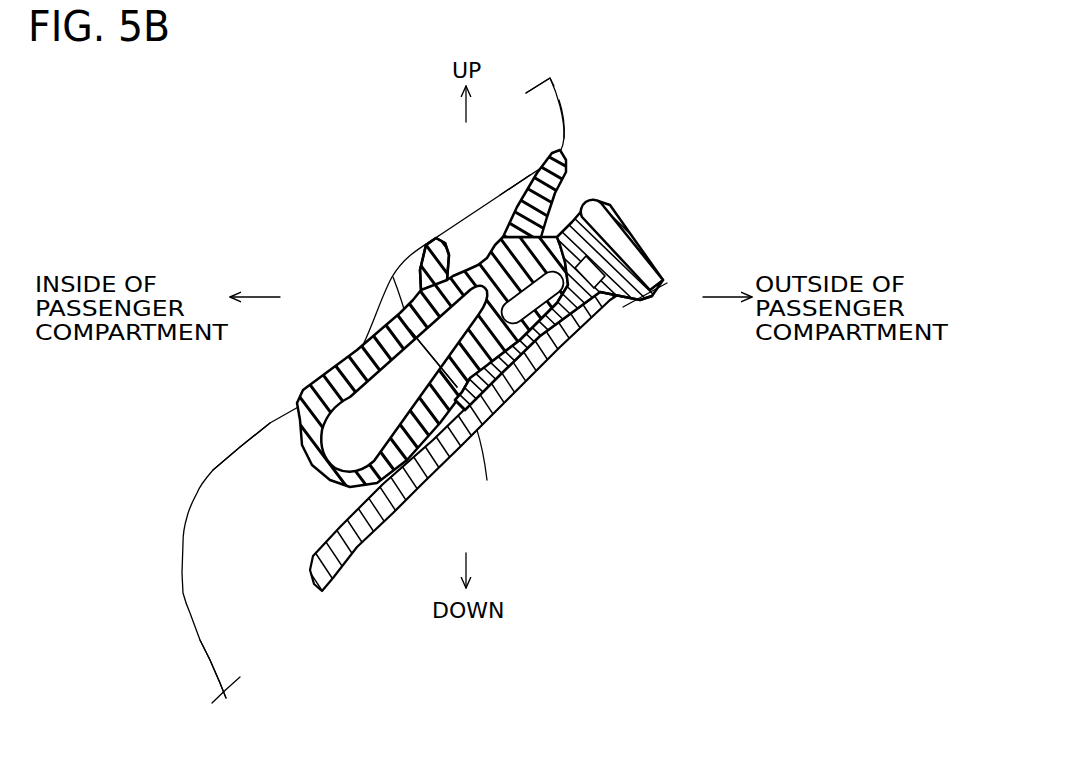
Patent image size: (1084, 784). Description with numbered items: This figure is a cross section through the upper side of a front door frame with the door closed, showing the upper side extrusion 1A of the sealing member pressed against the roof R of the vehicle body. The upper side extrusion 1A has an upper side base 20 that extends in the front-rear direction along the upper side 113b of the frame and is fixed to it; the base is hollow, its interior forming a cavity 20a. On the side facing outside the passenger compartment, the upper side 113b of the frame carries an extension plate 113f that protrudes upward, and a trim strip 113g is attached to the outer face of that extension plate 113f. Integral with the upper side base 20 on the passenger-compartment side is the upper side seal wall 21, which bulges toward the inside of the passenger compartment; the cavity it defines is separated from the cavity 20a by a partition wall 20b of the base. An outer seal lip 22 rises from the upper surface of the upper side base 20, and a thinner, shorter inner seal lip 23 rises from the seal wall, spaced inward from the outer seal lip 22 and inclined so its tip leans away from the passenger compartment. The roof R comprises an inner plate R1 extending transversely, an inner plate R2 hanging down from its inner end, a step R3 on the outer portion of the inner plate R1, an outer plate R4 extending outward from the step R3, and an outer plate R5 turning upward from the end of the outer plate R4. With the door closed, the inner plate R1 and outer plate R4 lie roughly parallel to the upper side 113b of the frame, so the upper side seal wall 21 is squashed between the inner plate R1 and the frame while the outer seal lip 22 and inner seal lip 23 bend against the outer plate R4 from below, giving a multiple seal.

The upper side extrusion 1A is at (296, 407).
The upper side base 20 is at (553, 360).
The cavity 20a is at (577, 330).
The partition wall 20b is at (520, 377).
The upper side seal wall 21 is at (331, 372).
The outer seal lip 22 is at (573, 178).
The inner seal lip 23 is at (440, 243).
The upper side of the frame 113b is at (316, 556).
The extension plate 113f is at (606, 210).
The trim strip 113g is at (650, 273).
The roof R is at (567, 117).
The inner plate R1 is at (240, 447).
The inner plate R2 is at (210, 651).
The step R3 is at (457, 387).
The outer plate R4 is at (512, 188).
The outer plate R5 is at (549, 93).